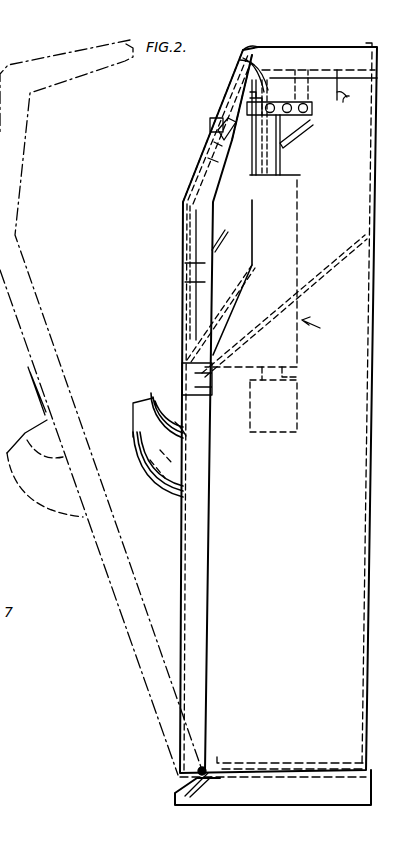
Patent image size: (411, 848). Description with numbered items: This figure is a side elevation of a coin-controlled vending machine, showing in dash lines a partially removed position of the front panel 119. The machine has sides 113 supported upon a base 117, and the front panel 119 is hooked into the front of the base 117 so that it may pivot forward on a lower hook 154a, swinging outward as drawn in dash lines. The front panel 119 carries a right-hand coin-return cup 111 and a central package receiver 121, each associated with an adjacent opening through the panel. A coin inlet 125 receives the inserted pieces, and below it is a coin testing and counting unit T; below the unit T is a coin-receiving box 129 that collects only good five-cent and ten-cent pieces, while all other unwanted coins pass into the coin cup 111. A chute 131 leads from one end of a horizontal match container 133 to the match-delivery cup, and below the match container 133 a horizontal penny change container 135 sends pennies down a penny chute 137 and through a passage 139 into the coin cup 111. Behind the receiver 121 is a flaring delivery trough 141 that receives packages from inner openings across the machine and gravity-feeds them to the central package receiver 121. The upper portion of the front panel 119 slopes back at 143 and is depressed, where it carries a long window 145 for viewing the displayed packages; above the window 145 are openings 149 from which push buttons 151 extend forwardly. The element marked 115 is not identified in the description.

The coin-return cup 111 is at (170, 402).
The sides 113 is at (232, 520).
The side wall 115 is at (371, 533).
The base 117 is at (288, 785).
The front panel 119 is at (100, 560).
The central package receiver 121 is at (133, 438).
The coin inlet 125 is at (250, 60).
The coin-receiving box 129 is at (300, 416).
The chute 131 is at (322, 272).
The match container 133 is at (348, 104).
The penny change container 135 is at (310, 124).
The penny chute 137 is at (293, 140).
The passage 139 is at (265, 177).
The flaring delivery trough 141 is at (218, 292).
The sloped upper portion 143 is at (240, 92).
The window 145 is at (205, 172).
The openings 149 is at (214, 136).
The push buttons 151 is at (208, 124).
The lower hook 154a is at (205, 778).
The coin testing and counting unit T is at (268, 280).